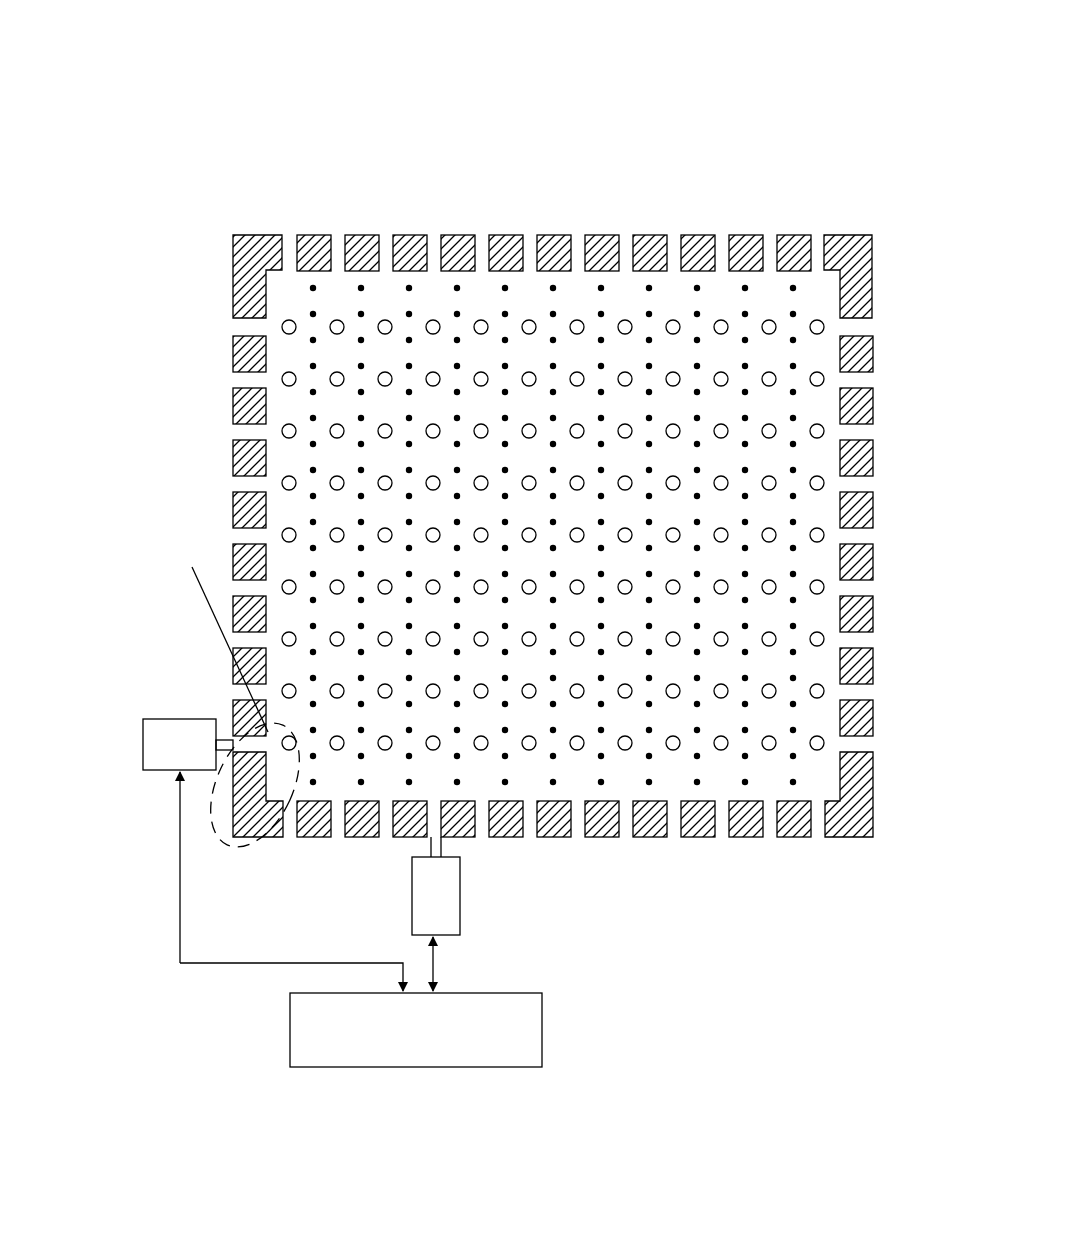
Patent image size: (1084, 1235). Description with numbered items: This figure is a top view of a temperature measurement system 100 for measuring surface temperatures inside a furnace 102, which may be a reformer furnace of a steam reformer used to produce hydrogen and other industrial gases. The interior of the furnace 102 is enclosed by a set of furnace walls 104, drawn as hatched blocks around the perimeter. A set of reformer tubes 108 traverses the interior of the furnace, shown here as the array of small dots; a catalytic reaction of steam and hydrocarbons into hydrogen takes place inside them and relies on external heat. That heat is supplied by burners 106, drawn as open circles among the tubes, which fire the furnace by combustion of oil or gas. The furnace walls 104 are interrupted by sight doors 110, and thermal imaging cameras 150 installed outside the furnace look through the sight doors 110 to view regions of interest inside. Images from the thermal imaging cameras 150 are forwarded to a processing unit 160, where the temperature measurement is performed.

The temperature measurement system 100 is at (775, 102).
The furnace 102 is at (775, 200).
The furnace wall 104 is at (647, 238).
The burner 106 is at (385, 327).
The reformer tube 108 is at (313, 470).
The sight door 110 is at (672, 832).
The thermal imaging camera 150 is at (553, 935).
The processing unit 160 is at (361, 919).